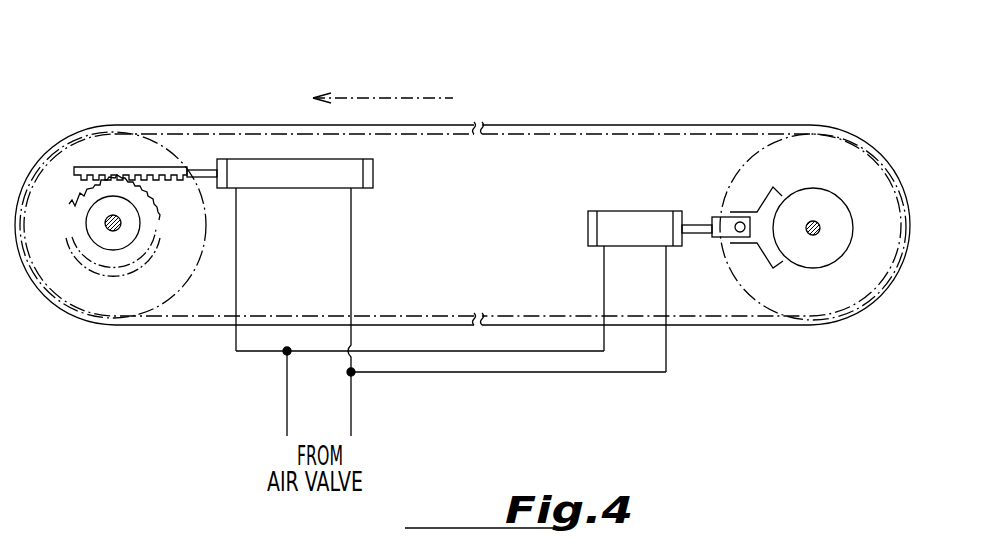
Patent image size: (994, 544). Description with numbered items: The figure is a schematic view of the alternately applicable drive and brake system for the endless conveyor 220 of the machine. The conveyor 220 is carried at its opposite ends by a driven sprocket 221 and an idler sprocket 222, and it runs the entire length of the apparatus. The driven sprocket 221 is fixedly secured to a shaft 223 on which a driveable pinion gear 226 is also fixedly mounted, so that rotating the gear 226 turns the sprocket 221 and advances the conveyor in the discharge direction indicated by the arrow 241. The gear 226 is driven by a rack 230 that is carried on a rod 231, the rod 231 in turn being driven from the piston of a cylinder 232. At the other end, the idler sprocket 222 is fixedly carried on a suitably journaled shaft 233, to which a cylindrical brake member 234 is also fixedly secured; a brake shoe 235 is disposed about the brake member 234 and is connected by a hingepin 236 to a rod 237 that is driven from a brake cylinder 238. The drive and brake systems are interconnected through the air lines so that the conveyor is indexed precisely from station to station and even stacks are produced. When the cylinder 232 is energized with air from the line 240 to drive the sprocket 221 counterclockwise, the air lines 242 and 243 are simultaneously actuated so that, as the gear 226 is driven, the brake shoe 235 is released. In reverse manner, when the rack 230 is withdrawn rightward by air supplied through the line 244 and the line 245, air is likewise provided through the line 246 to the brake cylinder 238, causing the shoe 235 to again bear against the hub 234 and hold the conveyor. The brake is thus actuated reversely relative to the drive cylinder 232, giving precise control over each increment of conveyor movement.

The endless conveyor 220 is at (193, 125).
The driven sprocket 221 is at (203, 257).
The idler sprocket 222 is at (795, 290).
The shaft 223 is at (117, 230).
The pinion gear 226 is at (159, 196).
The rack 230 is at (117, 168).
The rod 231 is at (202, 172).
The cylinder 232 is at (352, 176).
The shaft 233 is at (822, 230).
The cylindrical brake member 234 is at (833, 197).
The brake shoe 235 is at (772, 190).
The hingepin 236 is at (740, 220).
The rod 237 is at (700, 224).
The brake cylinder 238 is at (624, 222).
The line 240 is at (351, 395).
The arrow 241 is at (408, 98).
The air line 242 is at (351, 267).
The air line 243 is at (593, 373).
The line 244 is at (287, 378).
The line 245 is at (236, 270).
The line 246 is at (604, 277).